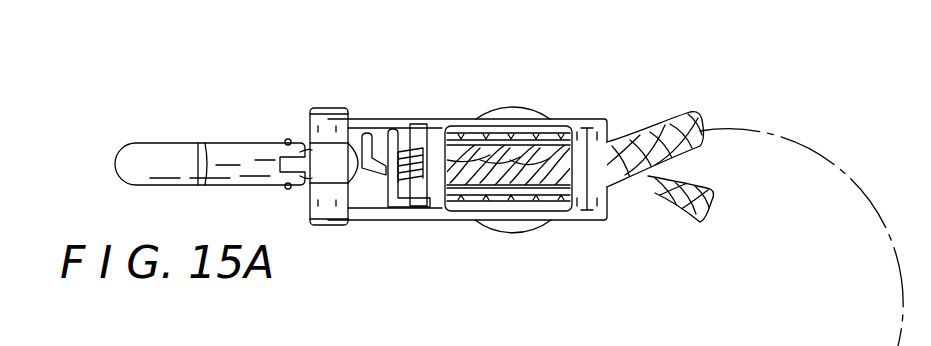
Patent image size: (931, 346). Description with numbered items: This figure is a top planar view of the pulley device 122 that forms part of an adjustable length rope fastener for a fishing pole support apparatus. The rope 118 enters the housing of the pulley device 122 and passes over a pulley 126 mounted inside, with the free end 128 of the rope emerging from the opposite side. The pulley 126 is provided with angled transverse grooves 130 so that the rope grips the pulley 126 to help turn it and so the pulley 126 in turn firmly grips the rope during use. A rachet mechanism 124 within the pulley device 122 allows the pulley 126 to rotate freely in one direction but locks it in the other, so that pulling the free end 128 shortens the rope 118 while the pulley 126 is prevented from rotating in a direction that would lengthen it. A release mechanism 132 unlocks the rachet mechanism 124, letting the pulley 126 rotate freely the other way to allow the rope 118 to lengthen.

The rope 118 is at (690, 215).
The pulley device 122 is at (383, 110).
The rachet mechanism 124 is at (125, 158).
The pulley 126 is at (543, 196).
The free end of the rope 128 is at (698, 163).
The angled transverse grooves 130 is at (513, 189).
The release mechanism 132 is at (372, 192).